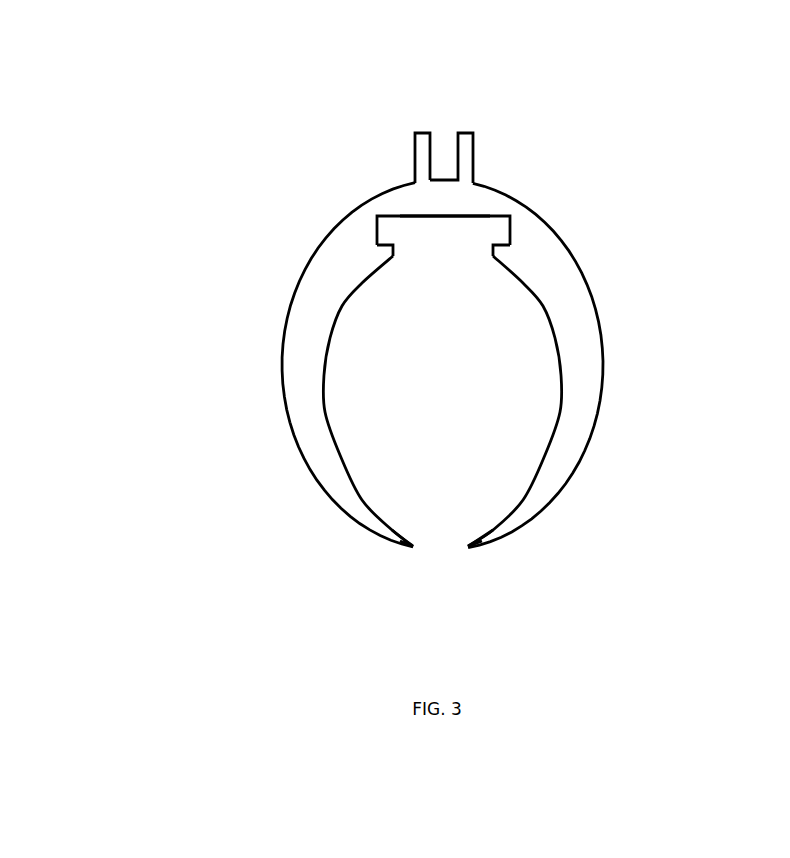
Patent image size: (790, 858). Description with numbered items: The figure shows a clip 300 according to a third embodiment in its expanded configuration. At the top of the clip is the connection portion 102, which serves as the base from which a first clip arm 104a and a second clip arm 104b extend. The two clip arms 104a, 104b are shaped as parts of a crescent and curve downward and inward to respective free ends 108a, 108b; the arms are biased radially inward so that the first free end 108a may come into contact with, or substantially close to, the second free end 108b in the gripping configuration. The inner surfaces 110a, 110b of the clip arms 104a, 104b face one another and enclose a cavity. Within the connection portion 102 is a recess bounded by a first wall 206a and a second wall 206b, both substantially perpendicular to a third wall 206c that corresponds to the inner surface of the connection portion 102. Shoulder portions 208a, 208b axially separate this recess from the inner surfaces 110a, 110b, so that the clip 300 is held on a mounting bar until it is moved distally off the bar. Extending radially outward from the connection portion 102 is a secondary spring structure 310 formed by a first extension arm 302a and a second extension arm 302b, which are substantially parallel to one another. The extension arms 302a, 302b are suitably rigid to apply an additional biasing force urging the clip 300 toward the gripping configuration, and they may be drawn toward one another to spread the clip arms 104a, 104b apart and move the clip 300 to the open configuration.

The connection portion 102 is at (443, 176).
The first clip arm 104a is at (300, 380).
The second clip arm 104b is at (587, 365).
The first free end 108a is at (412, 546).
The second free end 108b is at (469, 546).
The inner surface of the first clip arm 110a is at (335, 370).
The inner surface of the second clip arm 110b is at (550, 403).
The first wall 206a is at (377, 218).
The second wall 206b is at (423, 216).
The third wall 206c is at (510, 216).
The shoulder portion 208a is at (386, 248).
The shoulder portion 208b is at (496, 253).
The clip 300 is at (116, 243).
The first extension arm 302a is at (414, 147).
The second extension arm 302b is at (475, 143).
The secondary spring structure 310 is at (280, 116).